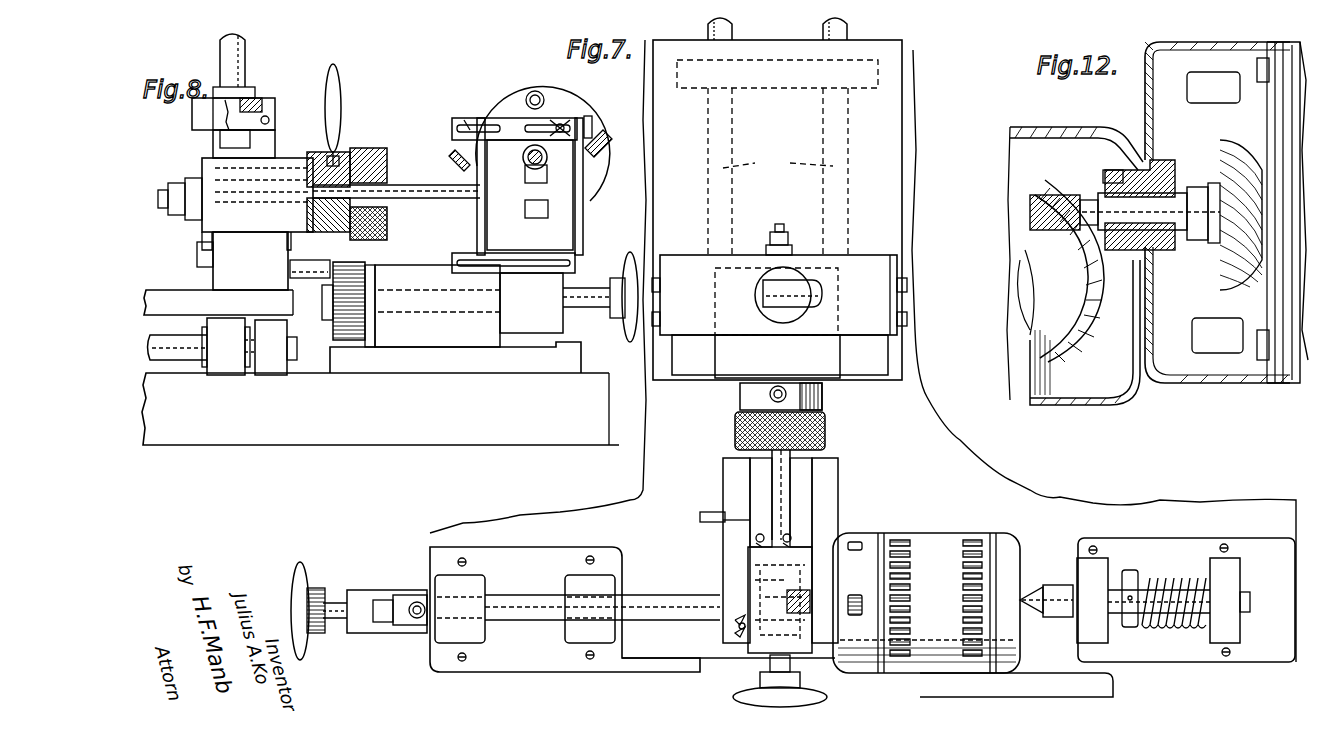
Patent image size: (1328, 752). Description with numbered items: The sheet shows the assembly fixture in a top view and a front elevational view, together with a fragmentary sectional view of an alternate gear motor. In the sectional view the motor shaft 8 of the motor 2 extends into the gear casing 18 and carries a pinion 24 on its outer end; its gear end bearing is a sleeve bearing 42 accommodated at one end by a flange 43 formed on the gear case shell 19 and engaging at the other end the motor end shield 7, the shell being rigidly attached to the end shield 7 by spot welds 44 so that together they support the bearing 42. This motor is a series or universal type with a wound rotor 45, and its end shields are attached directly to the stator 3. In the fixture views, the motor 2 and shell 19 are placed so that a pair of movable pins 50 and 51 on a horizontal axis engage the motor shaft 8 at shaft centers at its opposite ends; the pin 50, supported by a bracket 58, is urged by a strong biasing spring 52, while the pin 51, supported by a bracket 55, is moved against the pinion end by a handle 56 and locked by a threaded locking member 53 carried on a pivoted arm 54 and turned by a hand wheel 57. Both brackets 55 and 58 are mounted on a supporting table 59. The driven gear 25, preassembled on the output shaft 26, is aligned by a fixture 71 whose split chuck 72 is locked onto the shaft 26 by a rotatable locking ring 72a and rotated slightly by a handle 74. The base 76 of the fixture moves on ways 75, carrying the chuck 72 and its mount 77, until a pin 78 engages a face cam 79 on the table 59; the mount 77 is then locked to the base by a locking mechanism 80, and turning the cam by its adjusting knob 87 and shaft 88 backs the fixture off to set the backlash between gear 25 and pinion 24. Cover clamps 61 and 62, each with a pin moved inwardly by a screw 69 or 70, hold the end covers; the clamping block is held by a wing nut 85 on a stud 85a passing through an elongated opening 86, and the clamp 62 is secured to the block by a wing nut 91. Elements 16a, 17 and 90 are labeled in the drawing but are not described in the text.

In FIG. 8, the motor 2 is at (595, 77).
In FIG. 7, the motor 2 is at (973, 597).
In FIG. 12, the stator 3 is at (1292, 42).
In FIG. 12, the end shield 7 is at (1143, 110).
In FIG. 12, the motor shaft 8 is at (1175, 232).
In FIG. 7, the motor terminal 16a is at (855, 552).
In FIG. 7, the ventilation slots 17 is at (963, 602).
In FIG. 12, the gear casing 18 is at (1074, 124).
In FIG. 12, the gear case shell 19 is at (1096, 408).
In FIG. 7, the pinion 24 is at (810, 612).
In FIG. 12, the pinion 24 is at (1050, 194).
In FIG. 7, the driven gear 25 is at (750, 585).
In FIG. 12, the driven gear 25 is at (1072, 330).
In FIG. 8, the output shaft 26 is at (434, 200).
In FIG. 7, the output shaft 26 is at (778, 483).
In FIG. 12, the sleeve bearing 42 is at (1172, 160).
In FIG. 12, the flange 43 is at (1118, 168).
In FIG. 12, the spot welds 44 is at (1155, 360).
In FIG. 12, the wound rotor 45 is at (1238, 282).
In FIG. 7, the pin 50 is at (1055, 585).
In FIG. 8, the pin 51 is at (512, 175).
In FIG. 7, the pin 51 is at (666, 597).
In FIG. 7, the biasing spring 52 is at (1172, 595).
In FIG. 7, the threaded locking member 53 is at (336, 600).
In FIG. 7, the pivoted arm 54 is at (375, 632).
In FIG. 7, the bracket 55 is at (512, 680).
In FIG. 7, the handle 56 is at (414, 598).
In FIG. 7, the hand wheel 57 is at (296, 572).
In FIG. 7, the bracket 58 is at (1207, 652).
In FIG. 8, the supporting table 59 is at (382, 447).
In FIG. 8, the cover clamp 61 is at (583, 225).
In FIG. 8, the cover clamp 62 is at (475, 247).
In FIG. 8, the screw 69 is at (598, 160).
In FIG. 8, the screw 70 is at (460, 160).
In FIG. 8, the fixture 71 is at (293, 143).
In FIG. 7, the fixture 71 is at (732, 403).
In FIG. 8, the split chuck 72 is at (388, 158).
In FIG. 8, the locking ring 72a is at (368, 150).
In FIG. 7, the locking ring 72a is at (826, 430).
In FIG. 8, the handle 74 is at (337, 92).
In FIG. 7, the handle 74 is at (790, 393).
In FIG. 8, the ways 75 is at (186, 362).
In FIG. 7, the ways 75 is at (777, 157).
In FIG. 8, the base 76 is at (218, 278).
In FIG. 7, the base 76 is at (888, 155).
In FIG. 8, the mount 77 is at (220, 217).
In FIG. 8, the pin 78 is at (301, 262).
In FIG. 8, the face cam 79 is at (333, 332).
In FIG. 8, the locking mechanism 80 is at (205, 148).
In FIG. 8, the wing nut 85 is at (564, 118).
In FIG. 7, the wing nut 85 is at (735, 629).
In FIG. 8, the stud 85a is at (546, 175).
In FIG. 8, the elongated opening 86 is at (530, 148).
In FIG. 8, the adjusting knob 87 is at (628, 252).
In FIG. 8, the shaft 88 is at (322, 305).
In FIG. 8, the hand wheel 90 is at (595, 118).
In FIG. 7, the hand wheel 90 is at (765, 658).
In FIG. 8, the wing nut 91 is at (470, 116).
In FIG. 7, the wing nut 91 is at (790, 538).